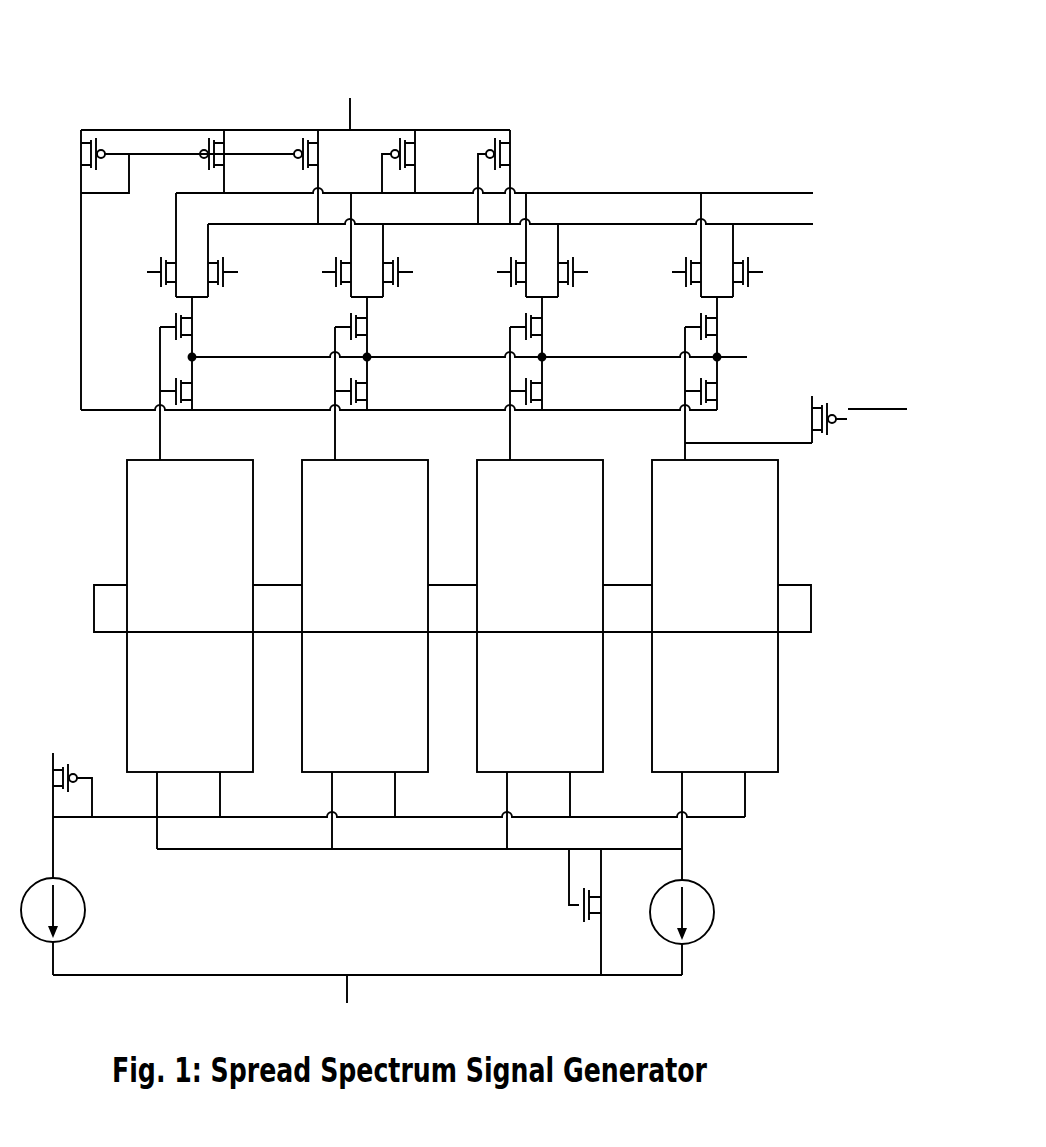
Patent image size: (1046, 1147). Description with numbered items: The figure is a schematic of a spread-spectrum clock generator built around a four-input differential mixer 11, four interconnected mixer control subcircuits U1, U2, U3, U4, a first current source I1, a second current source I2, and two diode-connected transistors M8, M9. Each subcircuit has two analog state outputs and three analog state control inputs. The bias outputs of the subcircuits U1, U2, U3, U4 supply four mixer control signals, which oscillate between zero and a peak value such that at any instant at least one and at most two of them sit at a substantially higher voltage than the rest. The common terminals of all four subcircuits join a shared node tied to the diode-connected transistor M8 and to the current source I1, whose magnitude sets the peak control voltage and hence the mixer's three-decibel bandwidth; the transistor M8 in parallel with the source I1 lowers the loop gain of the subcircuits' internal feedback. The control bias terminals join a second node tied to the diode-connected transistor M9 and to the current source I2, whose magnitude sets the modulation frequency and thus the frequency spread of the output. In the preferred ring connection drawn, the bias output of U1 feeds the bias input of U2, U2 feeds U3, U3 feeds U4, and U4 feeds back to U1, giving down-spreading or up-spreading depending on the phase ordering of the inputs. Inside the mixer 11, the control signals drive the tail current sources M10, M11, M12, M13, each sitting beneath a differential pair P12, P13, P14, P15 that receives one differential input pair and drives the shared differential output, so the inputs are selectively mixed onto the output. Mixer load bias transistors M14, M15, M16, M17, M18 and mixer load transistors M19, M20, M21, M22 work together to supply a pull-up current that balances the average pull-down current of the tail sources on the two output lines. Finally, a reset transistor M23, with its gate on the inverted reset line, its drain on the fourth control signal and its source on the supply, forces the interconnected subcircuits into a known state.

The four-input differential mixer 11 is at (464, 521).
The mixer control subcircuit U1 is at (189, 616).
The mixer control subcircuit U2 is at (364, 616).
The mixer control subcircuit U3 is at (539, 616).
The mixer control subcircuit U4 is at (714, 616).
The first current source I1 is at (699, 912).
The second current source I2 is at (66, 910).
The diode-connected transistor M8 is at (600, 912).
The diode-connected transistor M9 is at (58, 815).
The mixer tail current source M10 is at (195, 386).
The mixer tail current source M11 is at (370, 386).
The mixer tail current source M12 is at (545, 386).
The mixer tail current source M13 is at (720, 386).
The mixer load bias transistor M14 is at (195, 383).
The mixer load bias transistor M15 is at (370, 383).
The mixer load bias transistor M16 is at (545, 383).
The mixer load bias transistor M17 is at (720, 383).
The mixer load bias transistor M18 is at (168, 270).
The mixer load transistor M19 is at (512, 177).
The mixer load transistor M20 is at (325, 177).
The mixer load transistor M21 is at (416, 161).
The mixer load transistor M22 is at (229, 161).
The reset transistor M23 is at (796, 406).
The differential pair transistors P12 is at (192, 253).
The differential pair transistors P13 is at (367, 253).
The differential pair transistors P14 is at (542, 253).
The differential pair transistors P15 is at (717, 253).